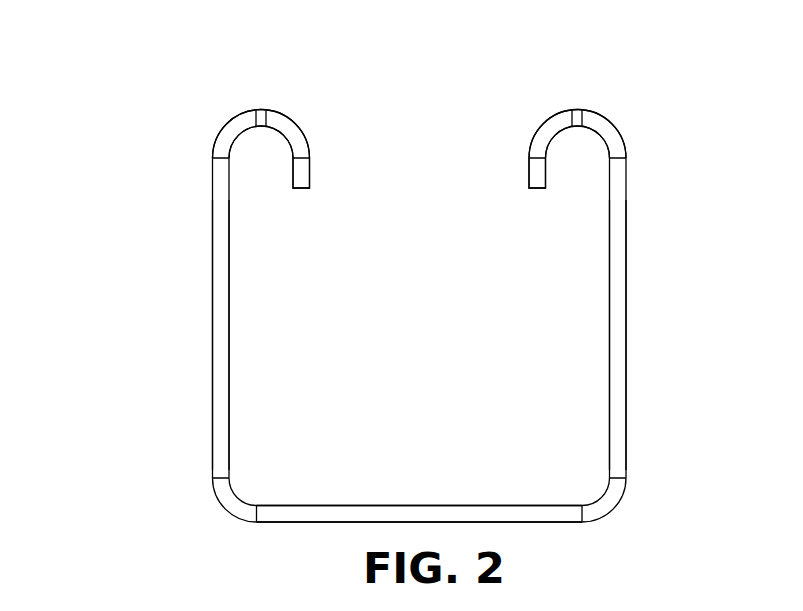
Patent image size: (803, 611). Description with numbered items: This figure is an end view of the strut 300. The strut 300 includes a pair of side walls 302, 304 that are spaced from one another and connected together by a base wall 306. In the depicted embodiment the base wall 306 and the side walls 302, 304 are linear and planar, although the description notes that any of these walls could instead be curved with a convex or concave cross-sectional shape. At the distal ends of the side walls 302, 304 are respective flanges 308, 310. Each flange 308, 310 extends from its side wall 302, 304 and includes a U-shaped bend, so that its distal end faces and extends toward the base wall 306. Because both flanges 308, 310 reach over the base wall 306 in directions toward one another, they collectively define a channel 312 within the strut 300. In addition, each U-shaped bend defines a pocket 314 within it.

The strut 300 is at (168, 123).
The side wall 302 is at (212, 332).
The side wall 304 is at (626, 297).
The base wall 306 is at (540, 523).
The flange 308 is at (277, 112).
The flange 310 is at (582, 112).
The channel 312 is at (425, 132).
The pocket 314 is at (263, 190).